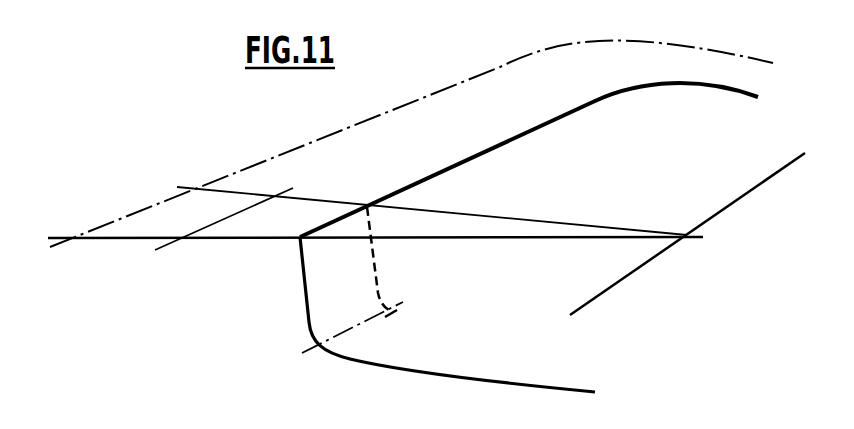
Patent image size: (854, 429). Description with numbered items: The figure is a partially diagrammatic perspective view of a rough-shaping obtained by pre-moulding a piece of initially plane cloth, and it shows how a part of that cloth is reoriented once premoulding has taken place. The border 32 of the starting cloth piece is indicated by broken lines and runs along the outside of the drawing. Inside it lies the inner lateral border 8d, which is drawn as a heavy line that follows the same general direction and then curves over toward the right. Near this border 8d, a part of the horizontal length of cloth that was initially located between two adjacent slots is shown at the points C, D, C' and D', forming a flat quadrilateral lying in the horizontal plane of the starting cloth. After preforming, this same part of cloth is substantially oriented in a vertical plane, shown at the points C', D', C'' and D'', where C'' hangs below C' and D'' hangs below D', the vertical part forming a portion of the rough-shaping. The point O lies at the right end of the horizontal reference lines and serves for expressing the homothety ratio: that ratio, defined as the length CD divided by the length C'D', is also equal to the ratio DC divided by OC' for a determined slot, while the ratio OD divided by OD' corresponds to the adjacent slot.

The border 32 is at (447, 88).
The lateral border 8d is at (525, 136).
The point O is at (426, 234).
The point C is at (224, 219).
The point D is at (432, 204).
The point C' is at (441, 300).
The point D' is at (372, 243).
The point C'' is at (346, 327).
The point D'' is at (395, 296).